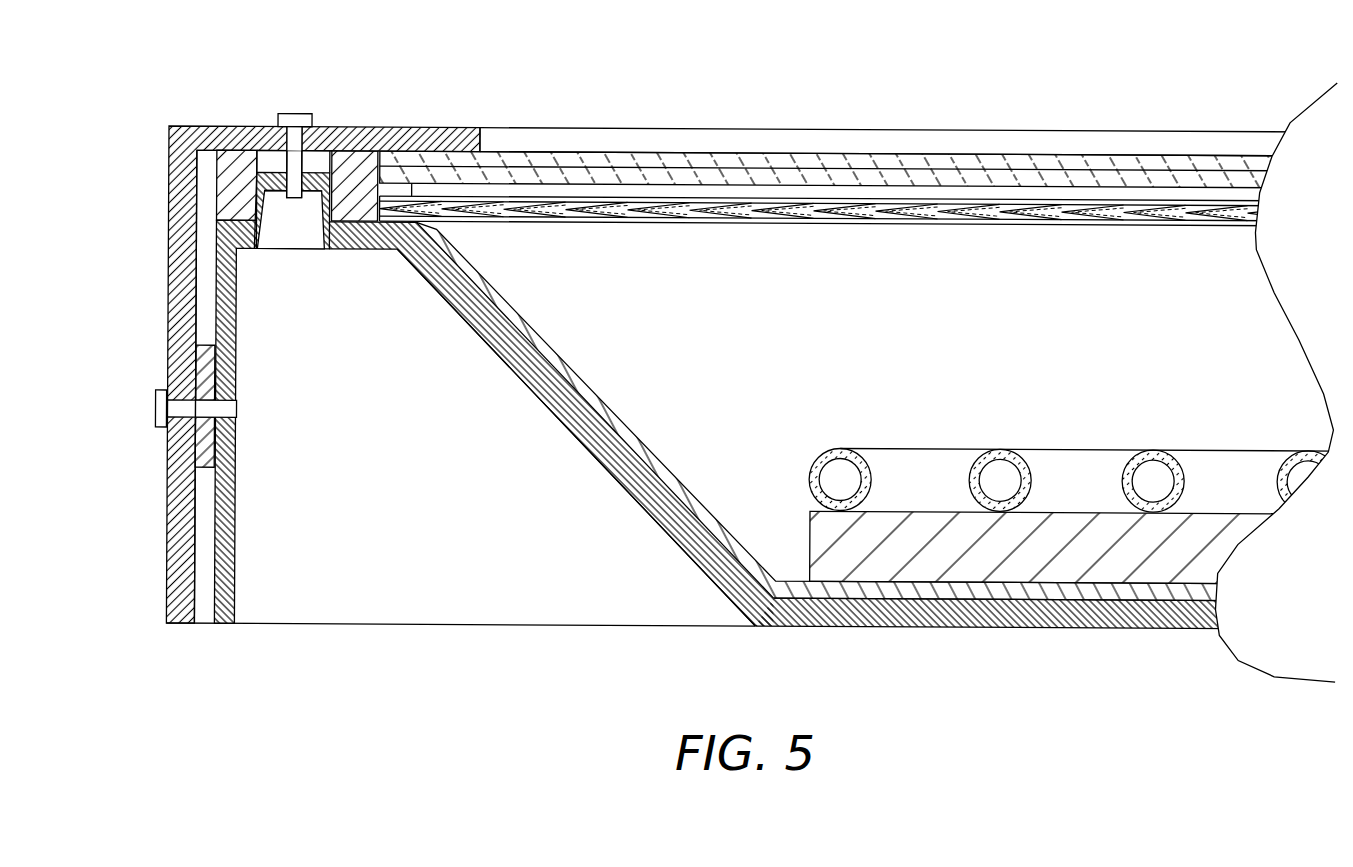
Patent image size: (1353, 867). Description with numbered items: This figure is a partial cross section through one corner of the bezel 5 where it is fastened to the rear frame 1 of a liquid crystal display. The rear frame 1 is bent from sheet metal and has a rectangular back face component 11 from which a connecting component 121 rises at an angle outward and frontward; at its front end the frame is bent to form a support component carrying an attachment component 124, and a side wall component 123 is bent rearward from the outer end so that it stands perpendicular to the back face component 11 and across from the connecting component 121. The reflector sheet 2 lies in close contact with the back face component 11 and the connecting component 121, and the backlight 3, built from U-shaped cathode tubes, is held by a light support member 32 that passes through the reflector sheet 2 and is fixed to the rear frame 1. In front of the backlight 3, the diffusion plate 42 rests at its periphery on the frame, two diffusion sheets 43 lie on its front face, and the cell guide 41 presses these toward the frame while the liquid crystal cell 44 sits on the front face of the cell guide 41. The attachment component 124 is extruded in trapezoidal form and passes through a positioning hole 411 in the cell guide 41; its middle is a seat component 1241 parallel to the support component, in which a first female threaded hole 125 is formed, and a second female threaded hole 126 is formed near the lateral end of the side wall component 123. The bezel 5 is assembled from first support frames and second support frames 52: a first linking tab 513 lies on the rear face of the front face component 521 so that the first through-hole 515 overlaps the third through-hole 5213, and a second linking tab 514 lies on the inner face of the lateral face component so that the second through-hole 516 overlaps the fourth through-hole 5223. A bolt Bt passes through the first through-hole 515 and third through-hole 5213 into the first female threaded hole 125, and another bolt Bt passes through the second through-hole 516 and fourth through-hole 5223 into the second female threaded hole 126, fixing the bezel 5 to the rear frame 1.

The rear frame 1 is at (618, 478).
The back face component 11 is at (1166, 626).
The connecting component 121 is at (715, 537).
The side wall component 123 is at (237, 510).
The attachment component 124 is at (259, 196).
The seat component 1241 is at (260, 176).
The first female threaded hole 125 is at (310, 198).
The second female threaded hole 126 is at (240, 420).
The reflector sheet 2 is at (681, 492).
The backlight 3 is at (1138, 458).
The light support member 32 is at (1232, 537).
The cell guide 41 is at (352, 187).
The positioning hole 411 is at (283, 213).
The diffusion plate 42 is at (1252, 219).
The diffusion sheet 43 is at (1253, 210).
The liquid crystal cell 44 is at (1252, 166).
The bezel 5 is at (180, 95).
The second support frame 52 is at (380, 137).
The front face component 521 is at (450, 125).
The third through-hole 5213 is at (280, 133).
The first linking tab 513 is at (281, 160).
The second linking tab 514 is at (168, 498).
The first through-hole 515 is at (304, 160).
The second through-hole 516 is at (203, 393).
The fourth through-hole 5223 is at (178, 418).
The bolt Bt is at (297, 113).